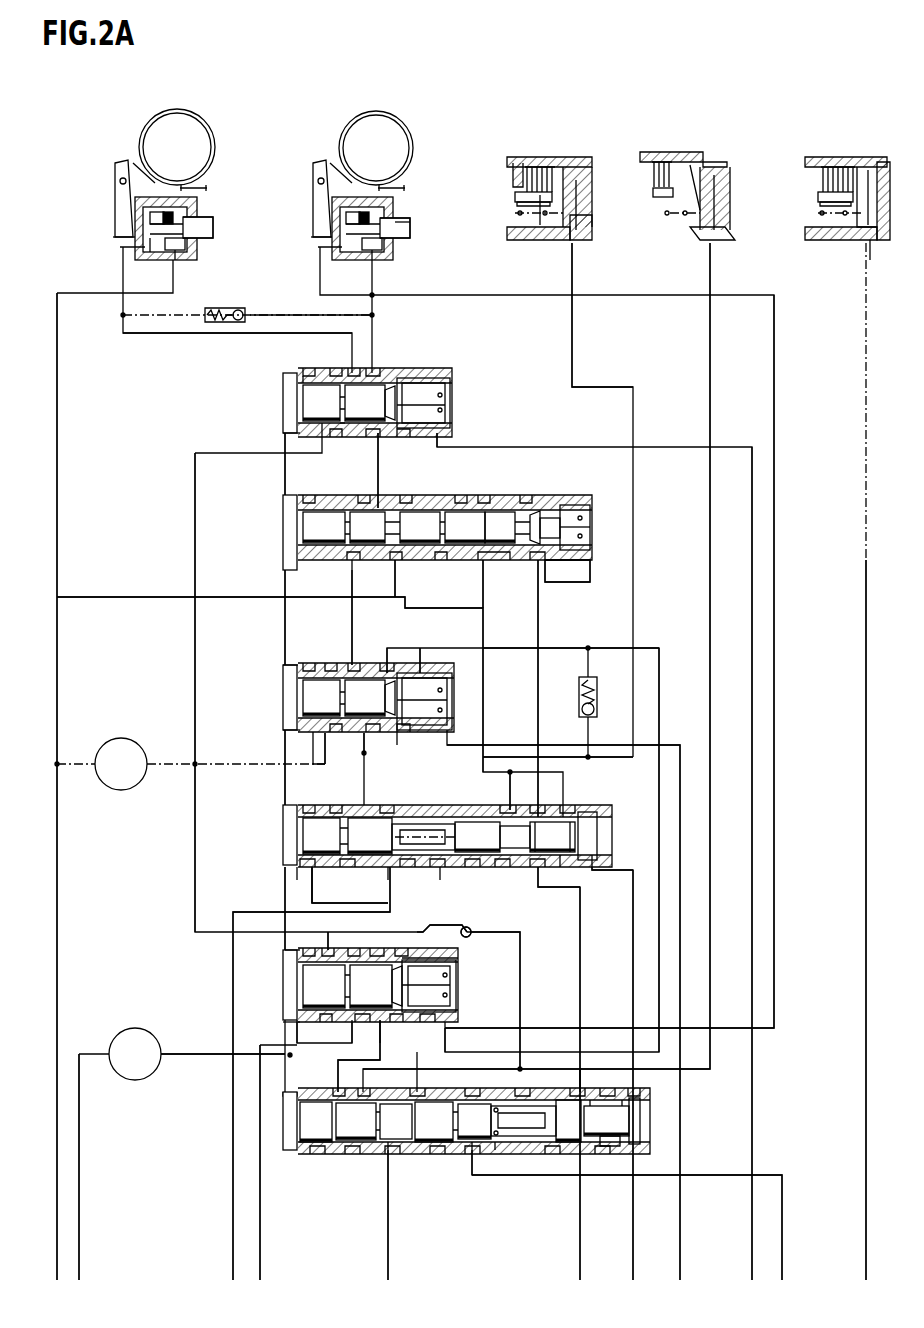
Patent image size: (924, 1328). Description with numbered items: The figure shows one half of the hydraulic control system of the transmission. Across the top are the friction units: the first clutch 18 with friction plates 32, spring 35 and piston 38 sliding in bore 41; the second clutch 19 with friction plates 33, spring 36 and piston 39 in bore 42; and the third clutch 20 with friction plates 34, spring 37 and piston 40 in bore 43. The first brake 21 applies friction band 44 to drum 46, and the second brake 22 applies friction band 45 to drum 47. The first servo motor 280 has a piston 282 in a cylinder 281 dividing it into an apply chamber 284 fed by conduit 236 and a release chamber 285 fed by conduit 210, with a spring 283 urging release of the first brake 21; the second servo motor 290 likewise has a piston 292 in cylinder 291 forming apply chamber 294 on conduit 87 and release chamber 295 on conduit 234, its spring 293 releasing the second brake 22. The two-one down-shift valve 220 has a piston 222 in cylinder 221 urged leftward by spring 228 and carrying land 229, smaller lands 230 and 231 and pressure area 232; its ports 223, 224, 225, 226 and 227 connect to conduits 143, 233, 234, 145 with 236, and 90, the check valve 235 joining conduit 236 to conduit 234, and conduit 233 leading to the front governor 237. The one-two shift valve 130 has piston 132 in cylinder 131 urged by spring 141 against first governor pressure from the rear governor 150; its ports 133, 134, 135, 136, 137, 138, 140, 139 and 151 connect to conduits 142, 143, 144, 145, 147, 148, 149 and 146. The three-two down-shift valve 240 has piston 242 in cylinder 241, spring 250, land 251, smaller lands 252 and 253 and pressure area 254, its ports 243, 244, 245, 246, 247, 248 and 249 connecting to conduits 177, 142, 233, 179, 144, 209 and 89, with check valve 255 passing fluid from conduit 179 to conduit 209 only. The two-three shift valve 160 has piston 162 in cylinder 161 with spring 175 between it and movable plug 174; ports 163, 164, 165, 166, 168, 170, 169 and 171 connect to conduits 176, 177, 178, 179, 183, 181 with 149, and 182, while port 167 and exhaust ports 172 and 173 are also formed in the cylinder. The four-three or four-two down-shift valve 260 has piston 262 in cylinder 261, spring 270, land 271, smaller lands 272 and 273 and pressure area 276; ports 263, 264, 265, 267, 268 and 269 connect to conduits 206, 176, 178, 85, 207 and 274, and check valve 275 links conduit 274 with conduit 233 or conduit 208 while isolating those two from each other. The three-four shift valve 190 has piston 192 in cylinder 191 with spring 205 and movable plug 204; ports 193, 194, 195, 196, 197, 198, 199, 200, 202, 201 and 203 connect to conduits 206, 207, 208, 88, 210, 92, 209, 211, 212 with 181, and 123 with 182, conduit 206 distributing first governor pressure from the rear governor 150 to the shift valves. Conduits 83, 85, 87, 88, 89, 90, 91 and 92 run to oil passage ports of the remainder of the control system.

The second brake 22 is at (180, 87).
The first brake 21 is at (334, 87).
The third clutch 20 is at (508, 90).
The first clutch 18 is at (640, 90).
The second clutch 19 is at (801, 100).
The brake band 45 is at (204, 116).
The brake band link 47 is at (206, 148).
The brake band 44 is at (398, 116).
The brake band link 46 is at (398, 140).
The servo lever 291 is at (143, 214).
The second servo motor 292 is at (214, 213).
The servo bracket 293 is at (130, 241).
The servo port 294 is at (175, 265).
The servo port 295 is at (143, 256).
The first servo motor 280 is at (408, 205).
The servo lever 290 is at (308, 198).
The servo bracket 283 is at (331, 243).
The servo port 285 is at (322, 258).
The servo piston 281 is at (362, 258).
The servo port 284 is at (374, 264).
The servo rod 282 is at (411, 237).
The clutch plates 34 is at (540, 165).
The clutch piston 40 is at (570, 172).
The clutch drum 43 is at (583, 205).
The clutch apply chamber 37 is at (542, 241).
The clutch plates 32 is at (674, 165).
The clutch piston 38 is at (710, 172).
The clutch drum 41 is at (716, 205).
The clutch apply chamber 35 is at (672, 226).
The clutch plates 33 is at (832, 165).
The clutch piston 39 is at (872, 172).
The clutch apply chamber 36 is at (848, 240).
The clutch drum 42 is at (872, 244).
The check valve 235 is at (230, 307).
The passage 236 is at (273, 317).
The passage 234 is at (194, 333).
The passage 87 is at (57, 391).
The passage 179 is at (572, 332).
The passage 91 is at (866, 351).
The passage 90 is at (692, 440).
The passage 208 is at (710, 579).
The passage 210 is at (774, 579).
The passage 209 is at (582, 653).
The check valve 255 is at (600, 702).
The passage 89 is at (570, 746).
The passage 183 is at (588, 757).
The passage 147 is at (483, 608).
The passage 149 is at (538, 621).
The passage 146 is at (172, 597).
The passage 233 is at (195, 511).
The passage 143 is at (285, 471).
The passage 145 is at (378, 473).
The passage 142 is at (285, 627).
The passage 144 is at (353, 624).
The passage 177 is at (285, 781).
The passage 176 is at (287, 904).
The passage 178 is at (333, 906).
The passage 83 is at (395, 912).
The passage 85 is at (258, 1116).
The passage 88 is at (388, 1281).
The passage 212 is at (580, 1273).
The passage 123 is at (633, 1273).
The passage 92 is at (782, 1273).
The passage 181 is at (578, 898).
The passage 182 is at (620, 872).
The passage 206 is at (272, 1062).
The passage 207 is at (345, 1059).
The check valve 275 is at (438, 921).
The passage 265 is at (326, 938).
The front governor 237 is at (133, 775).
The rear governor 150 is at (147, 1065).
The 2-1 down-shift valve 220 is at (414, 345).
The plug 229 is at (279, 394).
The port 232 is at (308, 370).
The valve land 230 is at (310, 370).
The valve land 225 is at (360, 362).
The passage 226 is at (375, 360).
The spring seat 231 is at (418, 368).
The spring chamber 228 is at (466, 389).
The spring 227 is at (462, 430).
The port 223 is at (283, 438).
The port 222 is at (360, 432).
The port 224 is at (331, 456).
The port 221 is at (437, 435).
The 1-2 shift valve 130 is at (522, 457).
The plug 133 is at (281, 570).
The valve land 134 is at (286, 495).
The valve land 136 is at (381, 505).
The valve land 131 is at (440, 506).
The valve land 132 is at (478, 508).
The valve land 137 is at (470, 561).
The spring seat 138 is at (503, 565).
The piston 139 is at (534, 567).
The port 148 is at (544, 582).
The spring chamber 140 is at (584, 562).
The spring 141 is at (589, 515).
The port 135 is at (353, 560).
The port 151 is at (397, 560).
The 3-2 down-shift valve 240 is at (220, 658).
The plug 251 is at (283, 689).
The port 244 is at (283, 665).
The valve land 241 is at (304, 664).
The valve land 252 is at (320, 664).
The spring seat 247 is at (349, 664).
The port 248 is at (387, 657).
The port 253 is at (420, 657).
The spring chamber 250 is at (458, 679).
The spring 249 is at (458, 719).
The port 243 is at (283, 732).
The port 254 is at (304, 732).
The port 245 is at (333, 732).
The port 246 is at (356, 732).
The port 242 is at (392, 732).
The 2-3 shift valve 160 is at (240, 832).
The plug 163 is at (285, 863).
The valve land 164 is at (290, 805).
The valve land 166 is at (363, 806).
The valve stem 162 is at (392, 864).
The valve land 161 is at (470, 863).
The valve land 175 is at (501, 857).
The piston 169 is at (540, 812).
The port 168 is at (510, 807).
The end plug 170 is at (563, 809).
The port 174 is at (563, 859).
The port 171 is at (594, 868).
The port 165 is at (300, 868).
The port 172 is at (320, 868).
The port 167 is at (388, 869).
The port 173 is at (442, 869).
The 4-3,4-2 down-shift valve 260 is at (240, 987).
The plug 271 is at (290, 1006).
The port 264 is at (286, 955).
The valve land 276 is at (284, 973).
The valve land 262 is at (354, 975).
The spring seat 261 is at (371, 973).
The port 274 is at (444, 952).
The spring chamber 269 is at (456, 958).
The spring 270 is at (456, 996).
The port 263 is at (285, 1023).
The port 272 is at (311, 1020).
The port 267 is at (348, 1020).
The port 268 is at (379, 1020).
The port 273 is at (406, 1020).
The 3-4 shift valve 190 is at (375, 1190).
The plug 191 is at (343, 1155).
The valve land 193 is at (286, 1092).
The valve land 194 is at (338, 1086).
The valve land 195 is at (365, 1097).
The port 196 is at (388, 1153).
The valve land 192 is at (424, 1155).
The port 197 is at (417, 1095).
The valve land 198 is at (468, 1097).
The port 199 is at (468, 1153).
The valve stem 200 is at (553, 1095).
The valve land 201 is at (578, 1083).
The passage 211 is at (582, 1070).
The piston 202 is at (606, 1099).
The end plug 203 is at (632, 1097).
The port 204 is at (604, 1143).
The port 205 is at (503, 1143).